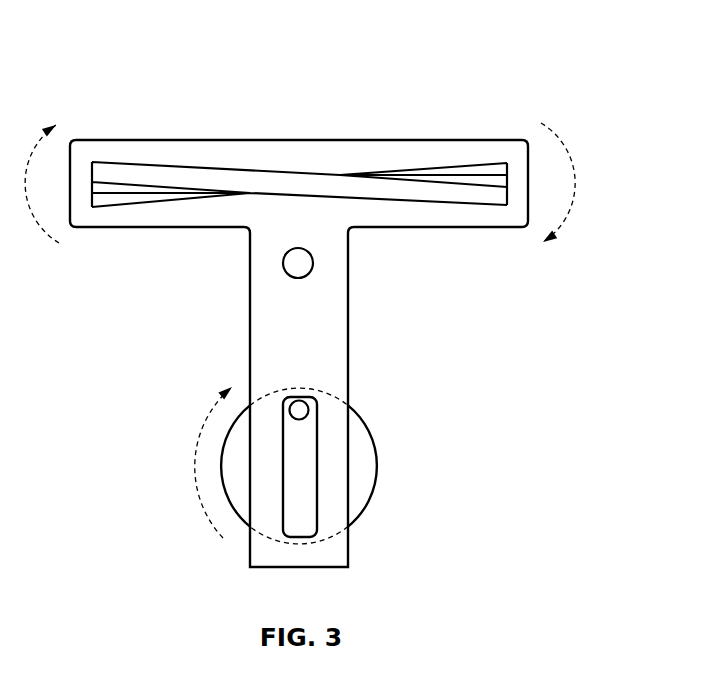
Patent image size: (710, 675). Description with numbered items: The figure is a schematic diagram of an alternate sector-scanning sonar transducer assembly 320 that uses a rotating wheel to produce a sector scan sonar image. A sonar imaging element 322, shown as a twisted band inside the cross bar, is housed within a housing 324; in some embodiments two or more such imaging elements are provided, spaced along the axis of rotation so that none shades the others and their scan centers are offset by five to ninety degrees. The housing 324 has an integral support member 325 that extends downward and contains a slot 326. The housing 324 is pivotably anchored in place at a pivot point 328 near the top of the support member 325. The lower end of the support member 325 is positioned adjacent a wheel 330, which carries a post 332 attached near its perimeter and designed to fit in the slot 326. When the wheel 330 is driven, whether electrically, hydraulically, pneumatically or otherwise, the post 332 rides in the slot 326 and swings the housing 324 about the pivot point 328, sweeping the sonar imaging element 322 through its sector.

The sector-scanning sonar transducer assembly 320 is at (368, 295).
The sonar imaging element 322 is at (143, 165).
The housing 324 is at (217, 228).
The support member 325 is at (250, 322).
The slot 326 is at (317, 507).
The pivot point 328 is at (286, 273).
The wheel 330 is at (378, 463).
The post 332 is at (298, 420).